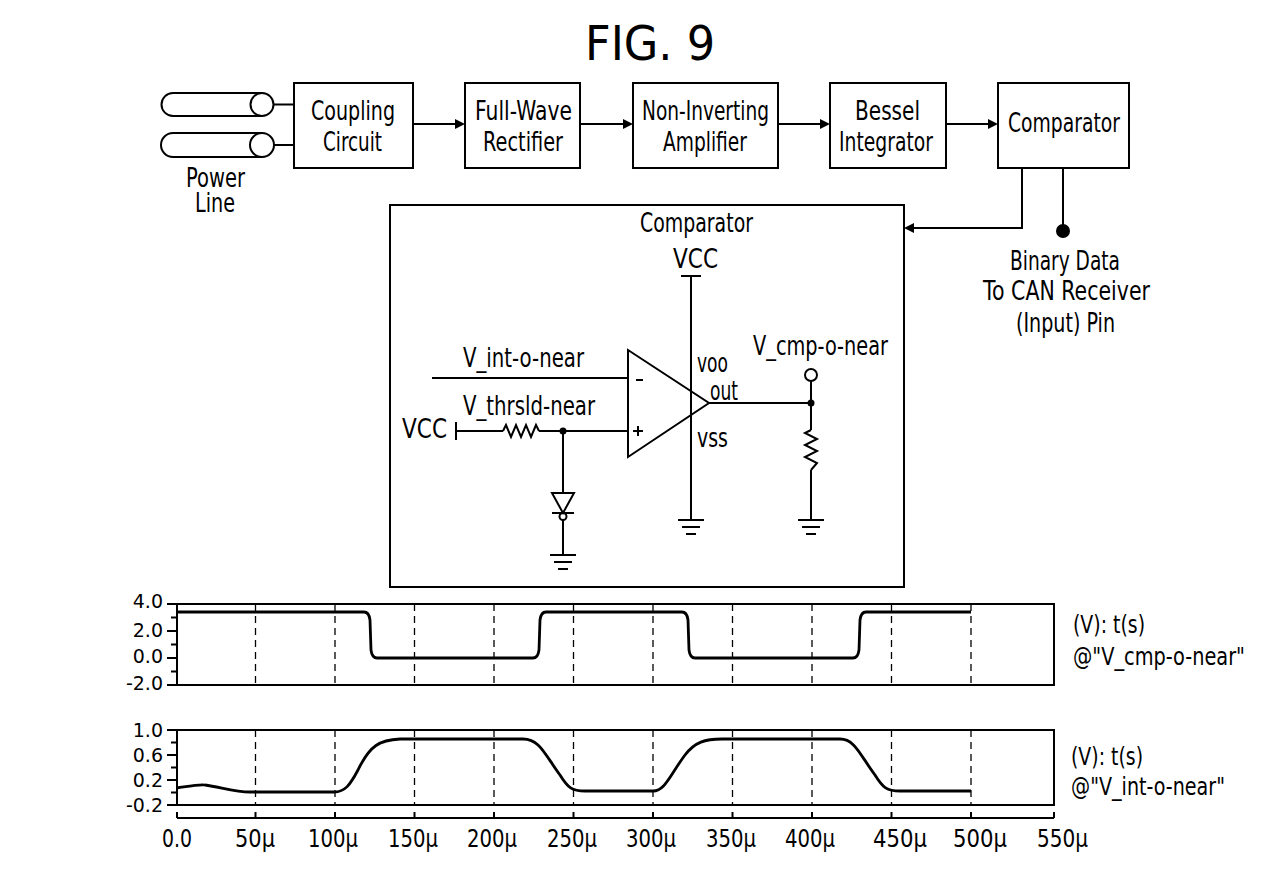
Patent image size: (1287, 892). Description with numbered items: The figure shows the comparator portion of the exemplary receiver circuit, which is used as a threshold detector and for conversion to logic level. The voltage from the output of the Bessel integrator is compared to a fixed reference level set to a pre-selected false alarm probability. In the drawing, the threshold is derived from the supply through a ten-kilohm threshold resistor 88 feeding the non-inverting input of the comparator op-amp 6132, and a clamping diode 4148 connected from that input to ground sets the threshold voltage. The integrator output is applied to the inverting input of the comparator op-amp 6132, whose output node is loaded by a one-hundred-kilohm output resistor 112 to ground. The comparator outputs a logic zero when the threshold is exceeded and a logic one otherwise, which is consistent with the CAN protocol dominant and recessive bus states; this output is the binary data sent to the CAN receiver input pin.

The resistor r88 (10k) 88 is at (521, 455).
The resistor r112 (100k) 112 is at (810, 450).
The comparator op-amp lm6132 6132 is at (659, 419).
The diode d1n4148 4148 is at (606, 504).